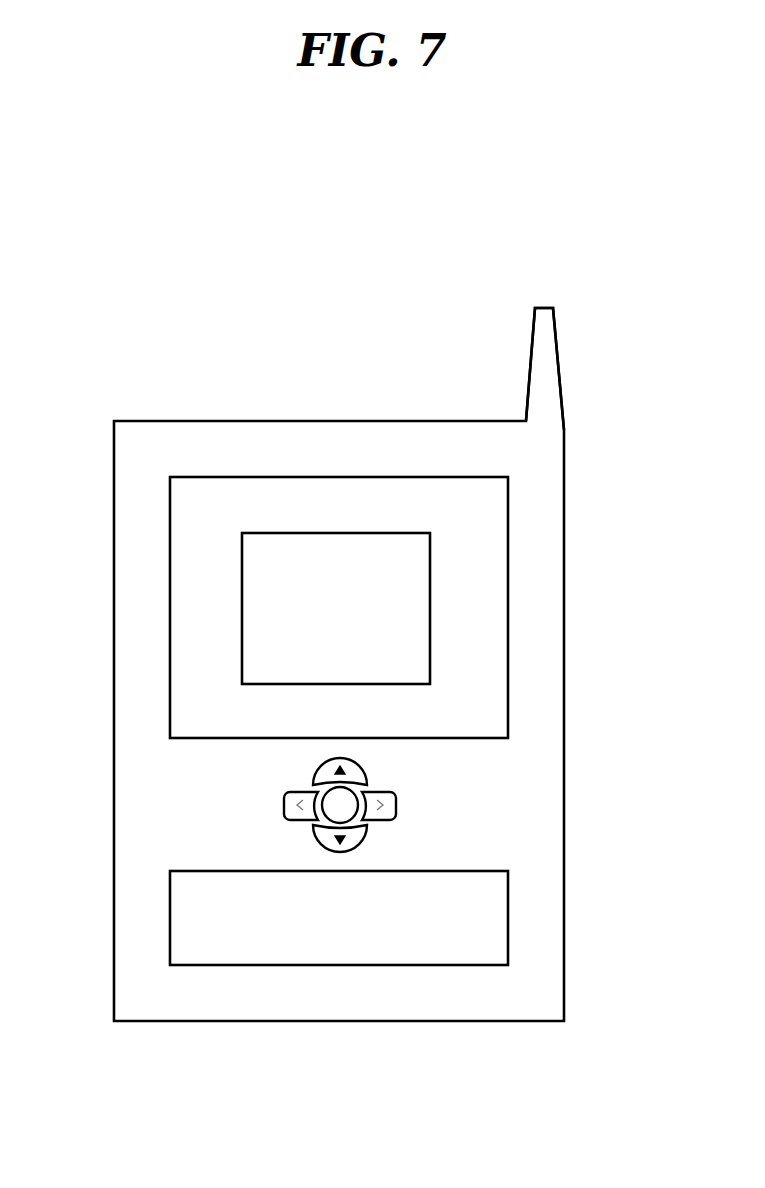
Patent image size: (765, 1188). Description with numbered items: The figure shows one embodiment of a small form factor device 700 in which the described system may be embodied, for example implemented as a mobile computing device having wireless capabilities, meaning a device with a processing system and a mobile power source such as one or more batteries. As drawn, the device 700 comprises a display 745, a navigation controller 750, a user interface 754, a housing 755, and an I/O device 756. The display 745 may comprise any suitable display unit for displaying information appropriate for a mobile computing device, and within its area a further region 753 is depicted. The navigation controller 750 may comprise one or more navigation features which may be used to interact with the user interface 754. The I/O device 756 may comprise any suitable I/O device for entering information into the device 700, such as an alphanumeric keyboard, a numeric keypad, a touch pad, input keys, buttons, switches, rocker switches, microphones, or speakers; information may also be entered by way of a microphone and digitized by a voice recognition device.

The device 700 is at (132, 329).
The display 745 is at (508, 495).
The navigation controller 750 is at (410, 796).
The screen window 753 is at (430, 623).
The user interface 754 is at (565, 720).
The housing 755 is at (508, 908).
The I/O device 756 is at (530, 357).